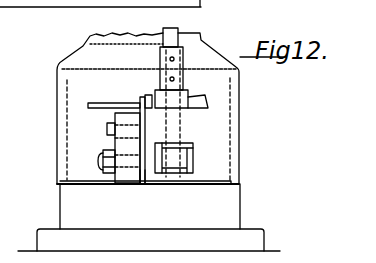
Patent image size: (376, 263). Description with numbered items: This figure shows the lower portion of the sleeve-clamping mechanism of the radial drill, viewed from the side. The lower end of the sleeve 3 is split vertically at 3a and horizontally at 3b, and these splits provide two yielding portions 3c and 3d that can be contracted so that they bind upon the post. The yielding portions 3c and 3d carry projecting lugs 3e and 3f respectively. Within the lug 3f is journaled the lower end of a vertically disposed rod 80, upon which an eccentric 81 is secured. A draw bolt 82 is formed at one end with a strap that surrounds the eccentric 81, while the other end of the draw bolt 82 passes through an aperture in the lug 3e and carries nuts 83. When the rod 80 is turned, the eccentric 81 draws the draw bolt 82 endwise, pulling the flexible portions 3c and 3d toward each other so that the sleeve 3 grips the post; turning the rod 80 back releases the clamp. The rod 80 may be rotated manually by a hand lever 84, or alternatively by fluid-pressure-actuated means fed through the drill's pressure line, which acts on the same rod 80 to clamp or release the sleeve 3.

The sleeve 3 is at (82, 60).
The vertical split 3a is at (150, 137).
The horizontal split 3b is at (107, 103).
The yielding portion 3c is at (110, 148).
The yielding portion 3d is at (148, 95).
The projecting lug 3e is at (134, 176).
The projecting lug 3f is at (148, 198).
The rod 80 is at (180, 30).
The eccentric 81 is at (194, 147).
The draw bolt 82 is at (101, 165).
The nuts 83 is at (109, 174).
The hand lever 84 is at (208, 101).